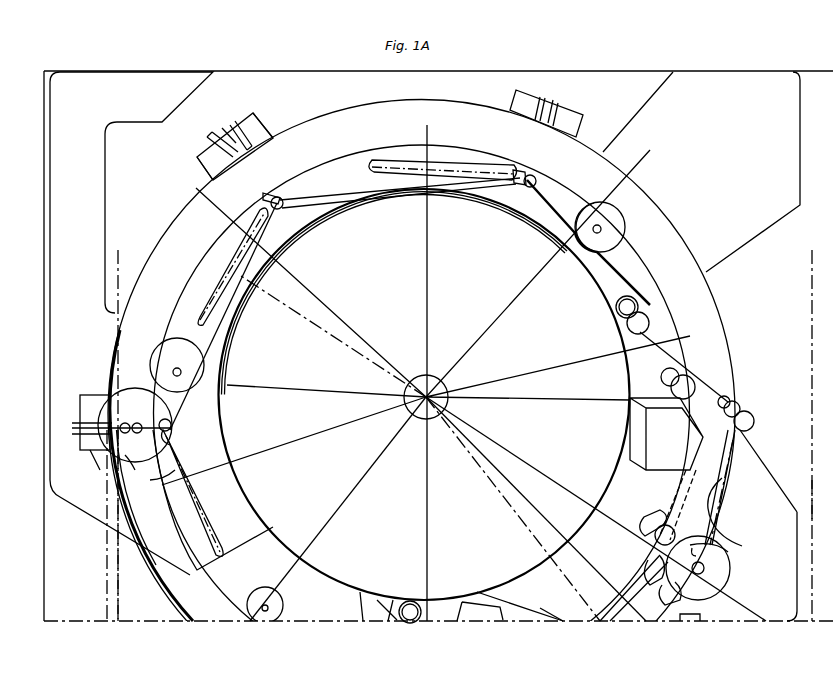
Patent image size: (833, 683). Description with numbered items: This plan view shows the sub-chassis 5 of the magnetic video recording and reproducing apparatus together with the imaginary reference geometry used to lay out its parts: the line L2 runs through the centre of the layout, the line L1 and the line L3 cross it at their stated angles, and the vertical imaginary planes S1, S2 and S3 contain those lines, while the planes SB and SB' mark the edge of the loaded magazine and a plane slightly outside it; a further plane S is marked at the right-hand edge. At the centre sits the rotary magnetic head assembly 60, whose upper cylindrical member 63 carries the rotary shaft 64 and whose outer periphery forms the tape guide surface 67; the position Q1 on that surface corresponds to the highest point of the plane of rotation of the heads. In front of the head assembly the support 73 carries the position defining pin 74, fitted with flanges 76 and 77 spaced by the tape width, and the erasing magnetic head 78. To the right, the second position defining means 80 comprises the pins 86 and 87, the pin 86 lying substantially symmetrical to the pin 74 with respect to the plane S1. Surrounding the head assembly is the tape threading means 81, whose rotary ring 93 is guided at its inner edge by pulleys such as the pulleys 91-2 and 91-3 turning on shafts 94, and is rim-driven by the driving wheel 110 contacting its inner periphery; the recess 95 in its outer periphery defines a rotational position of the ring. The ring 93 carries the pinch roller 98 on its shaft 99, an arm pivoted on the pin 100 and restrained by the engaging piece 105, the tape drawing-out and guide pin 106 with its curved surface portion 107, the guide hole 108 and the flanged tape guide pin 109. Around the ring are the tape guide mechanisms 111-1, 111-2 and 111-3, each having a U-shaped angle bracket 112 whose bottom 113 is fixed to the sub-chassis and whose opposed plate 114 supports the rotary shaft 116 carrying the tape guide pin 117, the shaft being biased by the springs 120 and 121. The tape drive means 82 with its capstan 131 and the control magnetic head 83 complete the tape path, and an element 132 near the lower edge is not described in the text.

The sub-chassis 5 is at (140, 73).
The rotary magnetic head assembly 60 is at (214, 500).
The upper cylindrical member 63 is at (602, 489).
The rotary shaft 64 is at (421, 376).
The tape guide surface 67 is at (293, 236).
The support 73 is at (557, 620).
The position defining pin 74 is at (421, 612).
The flange 76 is at (631, 300).
The flange 77 is at (644, 317).
The erasing magnetic head 78 is at (505, 605).
The second position defining means 80 is at (659, 368).
The tape threading means 81 is at (112, 470).
The tape drive means 82 is at (680, 493).
The control magnetic head 83 is at (659, 470).
The pin 86 is at (637, 305).
The pin 87 is at (670, 382).
The pulley 91-2 is at (194, 380).
The pulley 91-3 is at (600, 255).
The rotary ring 93 is at (636, 192).
The shaft 94 is at (387, 297).
The recess 95 is at (717, 490).
The pinch roller 98 is at (731, 568).
The shaft 99 is at (698, 576).
The pin 100 is at (586, 621).
The engaging piece 105 is at (638, 590).
The tape drawing-out and guide pin 106 is at (670, 604).
The curved surface portion 107 is at (647, 568).
The guide hole 108 is at (730, 551).
The tape guide pin 109 is at (740, 407).
The driving wheel 110 is at (284, 612).
The tape guide mechanism 111-1 is at (121, 411).
The tape guide mechanism 111-2 is at (253, 135).
The tape guide mechanism 111-3 is at (573, 113).
The U-shaped angle bracket 112 is at (250, 115).
The bottom 113 is at (200, 162).
The opposed plate 114 is at (226, 126).
The rotary shaft 116 is at (212, 136).
The tape guide pin 117 is at (284, 198).
The spring 120 is at (250, 150).
The spring 121 is at (508, 163).
The capstan 131 is at (642, 524).
The stop 132 is at (702, 618).
The position Q1 is at (253, 258).
The axis line S is at (812, 497).
The imaginary plane S1 is at (300, 320).
The imaginary plane S2 is at (428, 268).
The imaginary plane S3 is at (476, 471).
The line L1 is at (505, 442).
The line L2 is at (428, 500).
The line L3 is at (522, 510).
The imaginary plane SB is at (130, 525).
The imaginary plane SB' is at (89, 525).